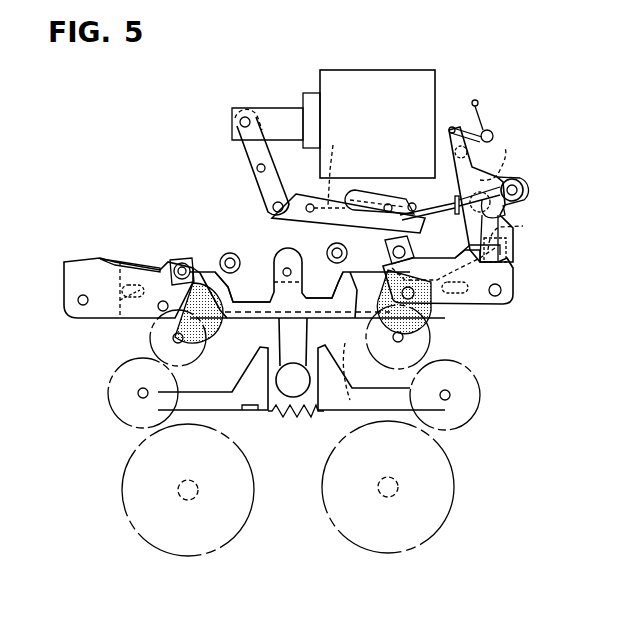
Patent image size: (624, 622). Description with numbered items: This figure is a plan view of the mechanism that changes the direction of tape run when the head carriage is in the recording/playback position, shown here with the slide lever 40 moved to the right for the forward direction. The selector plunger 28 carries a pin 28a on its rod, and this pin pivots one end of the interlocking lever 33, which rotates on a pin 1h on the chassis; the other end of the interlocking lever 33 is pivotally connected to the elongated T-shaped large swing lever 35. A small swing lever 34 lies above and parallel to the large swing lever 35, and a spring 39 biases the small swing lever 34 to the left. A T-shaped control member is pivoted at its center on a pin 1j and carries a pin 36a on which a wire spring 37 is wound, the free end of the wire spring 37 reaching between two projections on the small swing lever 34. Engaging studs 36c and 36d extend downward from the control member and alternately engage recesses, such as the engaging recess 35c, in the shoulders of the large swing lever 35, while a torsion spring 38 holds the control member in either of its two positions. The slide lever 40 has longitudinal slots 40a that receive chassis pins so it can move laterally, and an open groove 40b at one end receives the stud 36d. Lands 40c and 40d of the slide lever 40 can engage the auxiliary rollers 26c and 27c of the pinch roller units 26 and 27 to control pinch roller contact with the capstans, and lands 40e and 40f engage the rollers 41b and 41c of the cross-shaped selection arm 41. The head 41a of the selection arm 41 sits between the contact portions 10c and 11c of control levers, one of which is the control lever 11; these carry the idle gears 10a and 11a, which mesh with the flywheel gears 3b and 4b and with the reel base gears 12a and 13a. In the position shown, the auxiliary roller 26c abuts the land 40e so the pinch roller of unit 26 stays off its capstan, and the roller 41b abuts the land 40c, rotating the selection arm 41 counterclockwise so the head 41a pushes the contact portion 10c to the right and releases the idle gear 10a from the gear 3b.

The selector plunger 28 is at (362, 78).
The pin on plunger rod 28a is at (246, 117).
The interlocking lever 33 is at (246, 153).
The pin 1h is at (257, 168).
The large swing lever 35 is at (303, 198).
The small swing lever 34 is at (355, 195).
The control lever 11 is at (388, 203).
The wire spring 37 is at (427, 200).
The spring 39 is at (333, 164).
The torsion spring 38 is at (480, 116).
The engaging stud 36c is at (470, 152).
The engaging recess 35c is at (490, 172).
The pin 36a is at (523, 189).
The pin 1j is at (507, 212).
The open groove 40b is at (523, 226).
The slide lever 40 is at (66, 292).
The pinch roller unit 27 is at (88, 256).
The auxiliary roller 27c is at (170, 264).
The longitudinal slots 40a is at (118, 318).
The gear 4b is at (160, 345).
The selection arm 41 is at (287, 267).
The roller 41c is at (230, 253).
The land 40f is at (265, 270).
The land 40c is at (333, 247).
The roller 41b is at (388, 252).
The land 40e is at (416, 262).
The land 40d is at (203, 272).
The pinch roller unit 26 is at (500, 304).
The engaging stud 36d is at (512, 270).
The gear 3b is at (412, 336).
The contact portion 11c is at (252, 370).
The auxiliary roller 26c is at (348, 360).
The contact portion 10c is at (363, 378).
The head 41a is at (290, 385).
The idle gear 11a is at (118, 398).
The idle gear 10a is at (470, 407).
The gear 13a is at (133, 502).
The gear 12a is at (443, 504).